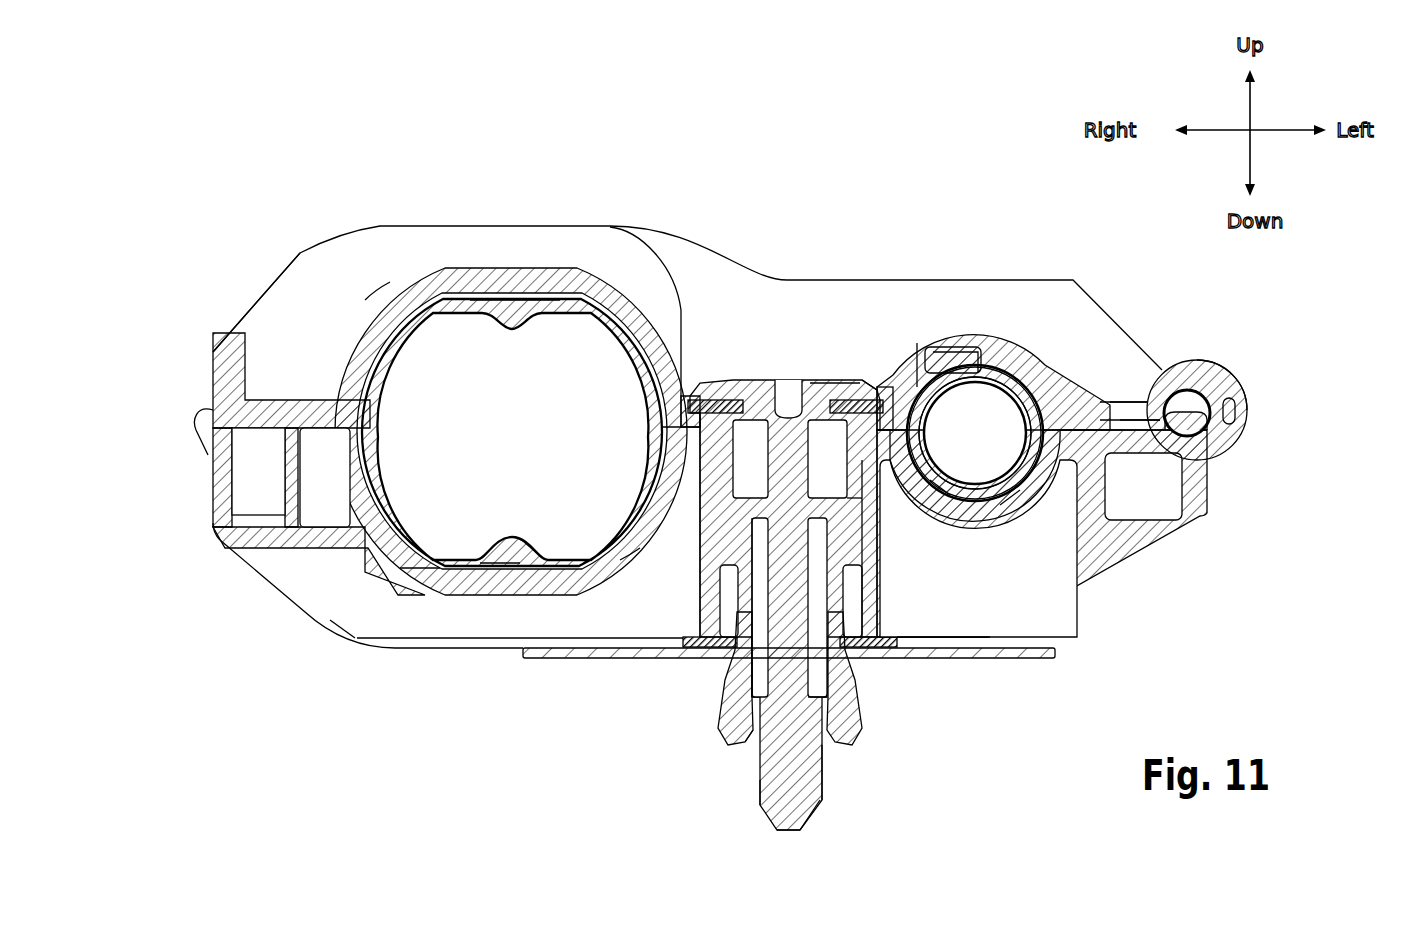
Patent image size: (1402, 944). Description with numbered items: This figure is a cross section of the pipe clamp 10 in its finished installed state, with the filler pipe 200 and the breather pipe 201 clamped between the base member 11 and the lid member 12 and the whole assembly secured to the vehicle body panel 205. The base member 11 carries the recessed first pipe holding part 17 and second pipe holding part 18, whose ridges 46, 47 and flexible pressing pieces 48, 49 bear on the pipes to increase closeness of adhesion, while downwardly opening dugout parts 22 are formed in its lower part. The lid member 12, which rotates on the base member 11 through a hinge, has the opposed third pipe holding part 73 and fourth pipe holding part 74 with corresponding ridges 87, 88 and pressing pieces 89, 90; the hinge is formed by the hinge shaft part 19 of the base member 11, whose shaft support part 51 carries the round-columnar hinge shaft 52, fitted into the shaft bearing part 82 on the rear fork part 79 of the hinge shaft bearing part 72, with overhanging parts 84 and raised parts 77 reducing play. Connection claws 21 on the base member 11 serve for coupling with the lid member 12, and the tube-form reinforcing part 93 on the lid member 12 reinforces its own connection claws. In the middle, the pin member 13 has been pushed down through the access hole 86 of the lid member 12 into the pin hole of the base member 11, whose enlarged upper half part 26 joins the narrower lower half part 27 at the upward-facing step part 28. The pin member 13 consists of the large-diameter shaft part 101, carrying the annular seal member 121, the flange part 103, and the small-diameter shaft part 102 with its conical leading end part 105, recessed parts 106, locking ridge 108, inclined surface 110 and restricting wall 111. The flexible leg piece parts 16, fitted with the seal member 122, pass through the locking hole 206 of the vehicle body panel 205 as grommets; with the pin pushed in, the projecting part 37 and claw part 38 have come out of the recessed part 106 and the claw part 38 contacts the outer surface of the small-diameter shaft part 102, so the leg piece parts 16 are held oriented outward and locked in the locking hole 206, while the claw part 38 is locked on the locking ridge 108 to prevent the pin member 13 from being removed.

The pipe clamp 10 is at (298, 180).
The base member 11 is at (280, 600).
The lid member 12 is at (268, 283).
The pin member 13 is at (748, 382).
The leg piece parts 16 is at (720, 730).
The first pipe holding part 17 is at (423, 567).
The second pipe holding part 18 is at (1013, 445).
The hinge shaft part 19 is at (1204, 518).
The connection claws 21 is at (198, 415).
The dugout parts 22 is at (345, 618).
The upper half part 26 is at (745, 478).
The lower half part 27 is at (762, 588).
The step part 28 is at (740, 523).
The projecting part 37 is at (753, 680).
The claw part 38 is at (813, 810).
The ridge 46 is at (497, 563).
The ridge 47 is at (952, 490).
The pressing piece 48 is at (630, 548).
The pressing piece 49 is at (1000, 513).
The shaft support part 51 is at (1140, 455).
The hinge shaft 52 is at (1190, 392).
The hinge shaft bearing part 72 is at (1252, 388).
The third pipe holding part 73 is at (510, 300).
The fourth pipe holding part 74 is at (984, 372).
The raised parts 77 is at (1240, 420).
The rear fork part 79 is at (1134, 404).
The shaft bearing part 82 is at (1213, 380).
The overhanging parts 84 is at (1147, 423).
The access hole 86 is at (689, 396).
The ridge 87 is at (438, 282).
The ridge 88 is at (942, 350).
The pressing piece 89 is at (372, 300).
The pressing piece 90 is at (955, 347).
The reinforcing part 93 is at (222, 490).
The large-diameter shaft part 101 is at (862, 393).
The small-diameter shaft part 102 is at (878, 572).
The flange part 103 is at (835, 395).
The leading end part 105 is at (793, 822).
The recessed parts 106 is at (763, 787).
The locking ridge 108 is at (750, 738).
The inclined surface 110 is at (823, 753).
The restricting wall 111 is at (846, 730).
The seal member 121 is at (897, 383).
The seal member 122 is at (890, 655).
The filler pipe 200 is at (578, 556).
The breather pipe 201 is at (968, 482).
The vehicle body panel 205 is at (1048, 660).
The locking hole 206 is at (818, 697).